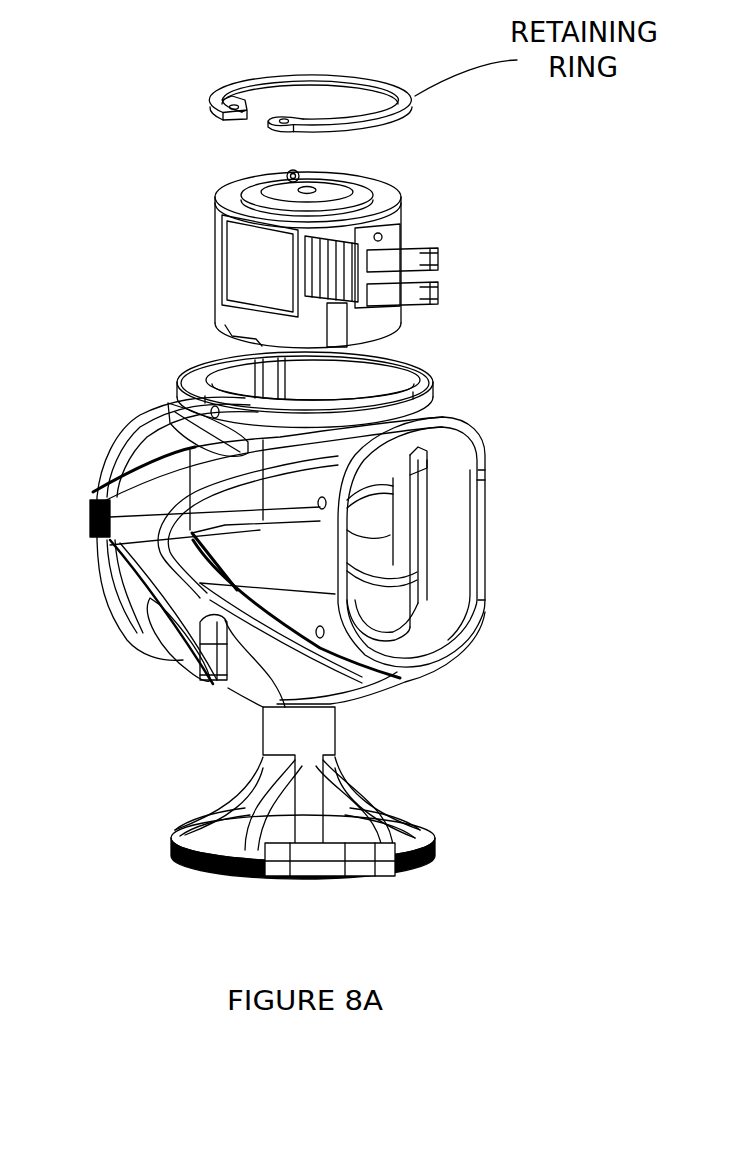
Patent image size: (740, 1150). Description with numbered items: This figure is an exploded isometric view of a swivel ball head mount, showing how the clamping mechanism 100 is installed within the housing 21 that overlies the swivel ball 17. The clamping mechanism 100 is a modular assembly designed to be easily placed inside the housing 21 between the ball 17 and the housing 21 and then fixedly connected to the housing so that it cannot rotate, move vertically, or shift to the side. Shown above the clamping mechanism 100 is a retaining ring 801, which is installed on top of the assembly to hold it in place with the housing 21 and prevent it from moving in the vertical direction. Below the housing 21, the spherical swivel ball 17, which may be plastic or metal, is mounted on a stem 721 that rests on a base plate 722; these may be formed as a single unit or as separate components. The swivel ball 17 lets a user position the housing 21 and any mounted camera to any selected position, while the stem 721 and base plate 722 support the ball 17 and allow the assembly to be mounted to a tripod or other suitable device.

The retaining ring 801 is at (208, 102).
The clamping mechanism 100 is at (427, 228).
The housing 21 is at (486, 441).
The spherical swivel ball 17 is at (245, 685).
The stem 721 is at (338, 728).
The base plate 722 is at (180, 860).